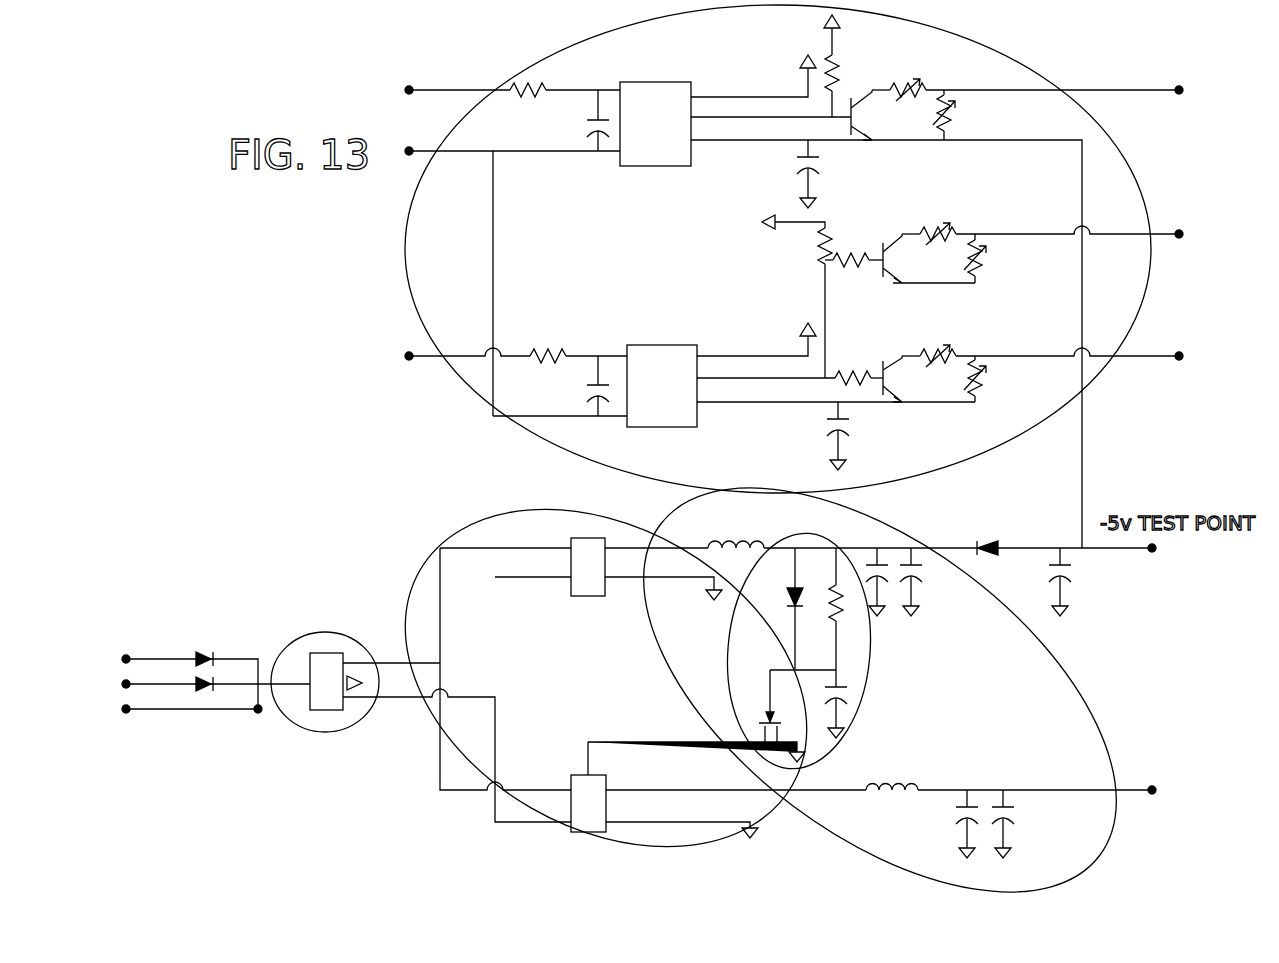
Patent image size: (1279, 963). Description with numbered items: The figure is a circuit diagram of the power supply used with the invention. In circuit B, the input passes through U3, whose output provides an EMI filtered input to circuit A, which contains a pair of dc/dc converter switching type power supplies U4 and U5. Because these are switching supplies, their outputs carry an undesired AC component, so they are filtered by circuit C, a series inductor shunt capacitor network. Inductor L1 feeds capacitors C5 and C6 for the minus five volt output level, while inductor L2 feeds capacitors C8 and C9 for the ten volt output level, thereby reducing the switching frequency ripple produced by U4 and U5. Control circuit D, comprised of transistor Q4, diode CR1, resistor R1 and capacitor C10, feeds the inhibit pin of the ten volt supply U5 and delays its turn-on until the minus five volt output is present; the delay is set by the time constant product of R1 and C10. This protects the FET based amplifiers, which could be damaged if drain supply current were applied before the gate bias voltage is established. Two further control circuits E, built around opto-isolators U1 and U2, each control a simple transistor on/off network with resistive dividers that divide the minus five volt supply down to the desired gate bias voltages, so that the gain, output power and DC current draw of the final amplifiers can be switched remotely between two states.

The opto-isolator U1 is at (655, 124).
The opto-isolator U2 is at (662, 386).
The EMI filter U3 is at (336, 681).
The dc/dc converter switching type power supply U4 is at (588, 567).
The dc/dc converter switching type power supply U5 is at (588, 803).
The inductor L1 is at (749, 531).
The inductor L2 is at (907, 775).
The diode CR1 is at (775, 609).
The resistor R1 is at (824, 609).
The capacitor C5 is at (869, 582).
The capacitor C6 is at (926, 582).
The capacitor C8 is at (951, 824).
The capacitor C9 is at (1021, 824).
The capacitor C10 is at (860, 704).
The transistor Q4 is at (696, 716).
The circuit A is at (462, 757).
The circuit B is at (327, 732).
The circuit C is at (1050, 660).
The control circuit D is at (870, 655).
The control circuits E is at (403, 252).